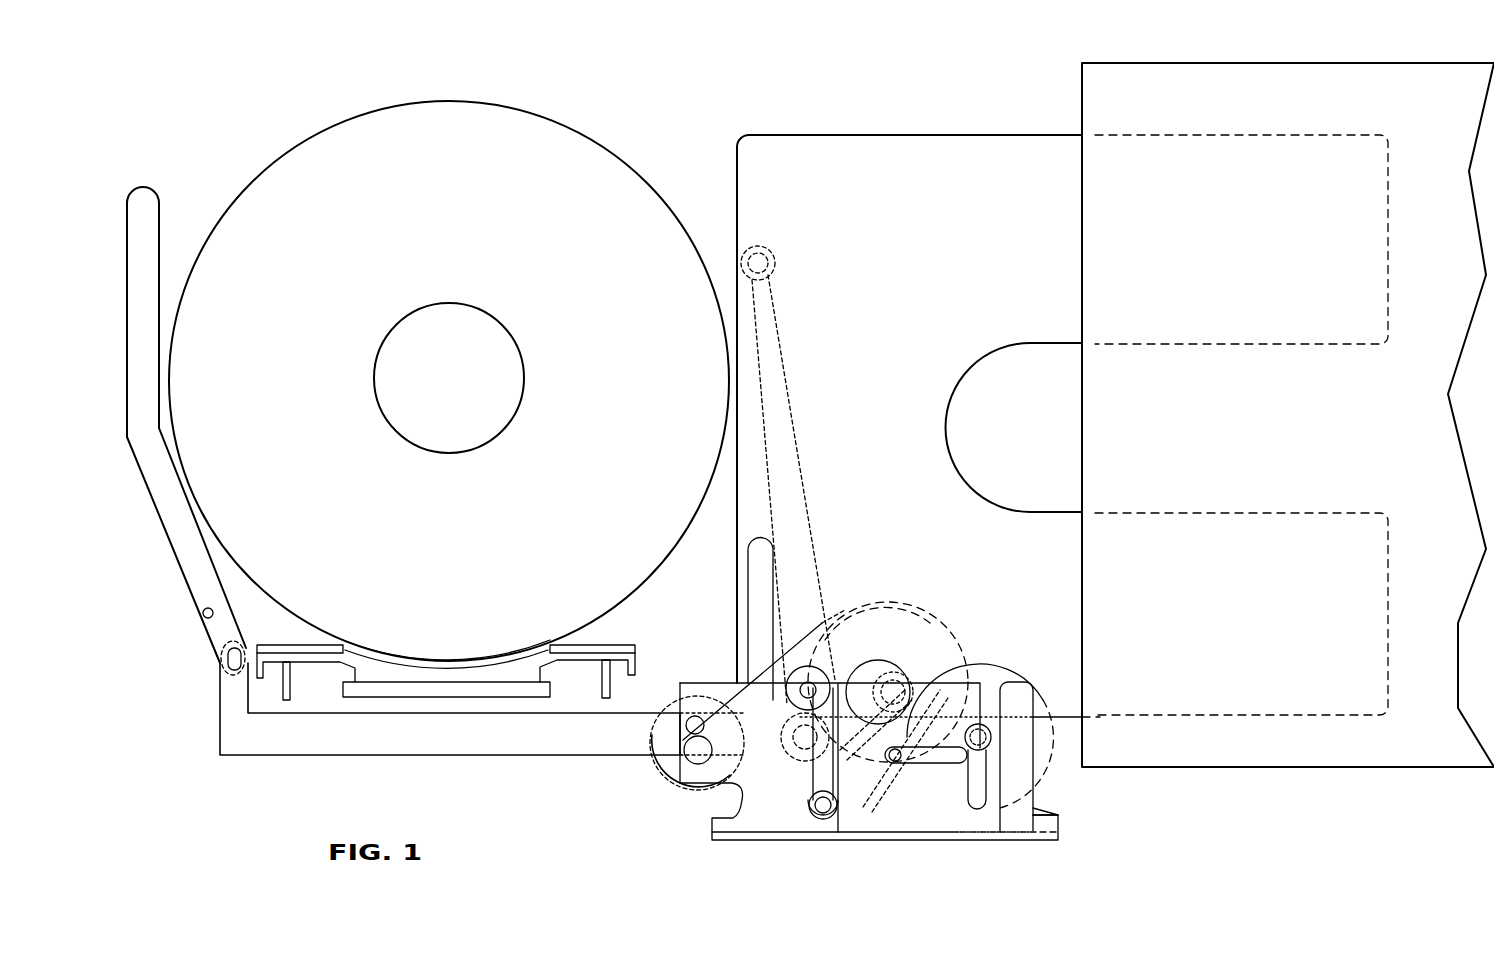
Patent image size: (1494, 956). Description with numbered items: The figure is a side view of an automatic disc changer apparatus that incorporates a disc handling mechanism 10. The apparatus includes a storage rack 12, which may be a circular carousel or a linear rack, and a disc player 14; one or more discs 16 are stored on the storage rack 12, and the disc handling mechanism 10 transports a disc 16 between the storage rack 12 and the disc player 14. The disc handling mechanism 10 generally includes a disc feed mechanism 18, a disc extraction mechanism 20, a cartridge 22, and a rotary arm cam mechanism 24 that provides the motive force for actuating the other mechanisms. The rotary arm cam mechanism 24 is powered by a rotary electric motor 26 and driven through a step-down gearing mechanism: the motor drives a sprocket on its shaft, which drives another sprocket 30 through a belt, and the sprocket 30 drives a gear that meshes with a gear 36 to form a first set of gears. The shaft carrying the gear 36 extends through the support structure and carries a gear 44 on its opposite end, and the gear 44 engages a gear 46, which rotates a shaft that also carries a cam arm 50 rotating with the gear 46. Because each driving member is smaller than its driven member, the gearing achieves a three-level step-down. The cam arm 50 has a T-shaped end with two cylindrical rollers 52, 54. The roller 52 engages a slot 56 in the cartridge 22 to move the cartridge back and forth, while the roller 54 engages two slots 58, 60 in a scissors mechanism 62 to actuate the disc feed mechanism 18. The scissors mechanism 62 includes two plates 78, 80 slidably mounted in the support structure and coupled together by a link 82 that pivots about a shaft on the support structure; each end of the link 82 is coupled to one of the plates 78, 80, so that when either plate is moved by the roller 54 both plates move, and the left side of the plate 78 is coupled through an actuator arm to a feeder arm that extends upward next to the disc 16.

The disc handling mechanism 10 is at (611, 802).
The storage rack 12 is at (613, 640).
The disc player 14 is at (1233, 767).
The disc 16 is at (568, 122).
The disc feed mechanism 18 is at (182, 599).
The disc extraction mechanism 20 is at (797, 426).
The cartridge 22 is at (838, 135).
The rotary arm cam mechanism 24 is at (946, 608).
The rotary electric motor 26 is at (660, 785).
The sprocket 30 is at (849, 606).
The gear 36 is at (997, 664).
The gear 44 is at (977, 822).
The gear 46 is at (893, 606).
The cam arm 50 is at (862, 810).
The cylindrical roller 52 is at (862, 790).
The cylindrical roller 54 is at (866, 778).
The slot 56 is at (758, 632).
The slot 58 is at (803, 790).
The slot 60 is at (997, 778).
The scissors mechanism 62 is at (1037, 843).
The plate 78 is at (712, 836).
The plate 80 is at (1033, 808).
The link 82 is at (918, 768).